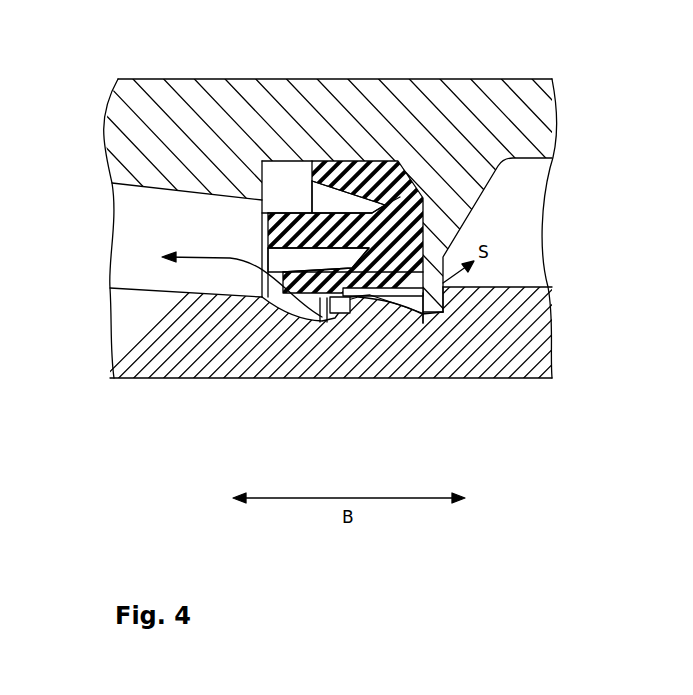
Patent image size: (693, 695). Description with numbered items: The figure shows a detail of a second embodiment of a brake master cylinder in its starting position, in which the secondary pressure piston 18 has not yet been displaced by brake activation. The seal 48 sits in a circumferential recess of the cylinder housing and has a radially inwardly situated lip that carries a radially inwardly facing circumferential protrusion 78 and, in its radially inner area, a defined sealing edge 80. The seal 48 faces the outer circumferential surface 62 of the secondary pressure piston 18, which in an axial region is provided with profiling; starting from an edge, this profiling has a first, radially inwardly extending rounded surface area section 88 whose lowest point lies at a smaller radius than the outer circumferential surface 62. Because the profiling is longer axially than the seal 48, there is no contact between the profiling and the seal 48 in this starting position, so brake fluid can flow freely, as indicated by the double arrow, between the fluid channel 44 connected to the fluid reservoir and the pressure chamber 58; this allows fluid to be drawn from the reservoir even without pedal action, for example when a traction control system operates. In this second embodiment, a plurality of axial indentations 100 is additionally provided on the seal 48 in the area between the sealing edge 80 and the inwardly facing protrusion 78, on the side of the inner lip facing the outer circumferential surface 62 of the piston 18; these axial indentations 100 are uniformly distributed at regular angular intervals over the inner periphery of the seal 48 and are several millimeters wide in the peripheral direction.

The secondary piston 18 is at (350, 356).
The fluid channel 44 is at (503, 228).
The seal 48 is at (368, 150).
The pressure chamber 58 is at (183, 228).
The outer circumferential surface 62 is at (525, 286).
The circumferential protrusion 78 is at (322, 323).
The sealing edge 80 is at (426, 305).
The first surface area section 88 is at (518, 300).
The axial indentations 100 is at (368, 300).